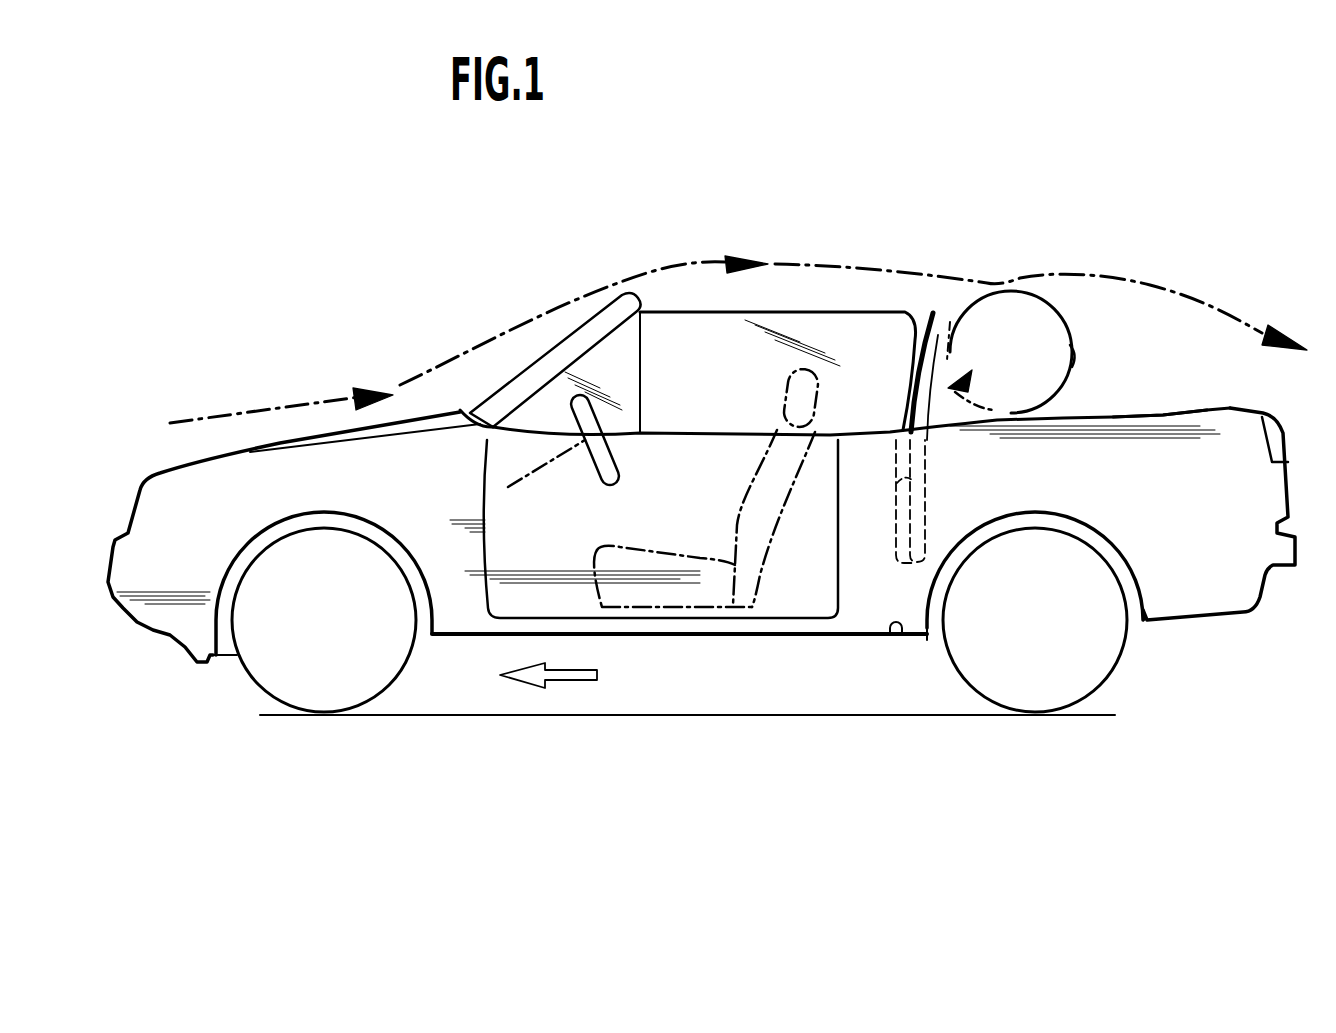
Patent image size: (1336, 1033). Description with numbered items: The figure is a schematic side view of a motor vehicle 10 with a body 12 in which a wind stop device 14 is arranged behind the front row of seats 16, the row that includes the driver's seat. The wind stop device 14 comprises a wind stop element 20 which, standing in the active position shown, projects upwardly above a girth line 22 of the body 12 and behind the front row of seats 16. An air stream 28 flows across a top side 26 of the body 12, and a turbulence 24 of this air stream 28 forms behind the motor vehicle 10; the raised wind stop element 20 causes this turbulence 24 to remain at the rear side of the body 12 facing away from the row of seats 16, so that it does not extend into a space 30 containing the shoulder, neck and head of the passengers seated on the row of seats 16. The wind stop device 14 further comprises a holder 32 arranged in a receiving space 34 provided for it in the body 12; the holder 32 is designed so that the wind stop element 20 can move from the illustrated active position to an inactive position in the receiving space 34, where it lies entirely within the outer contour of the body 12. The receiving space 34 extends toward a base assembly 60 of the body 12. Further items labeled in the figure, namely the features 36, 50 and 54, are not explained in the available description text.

The motor vehicle 10 is at (447, 585).
The body 12 is at (697, 487).
The wind stop device 14 is at (1007, 413).
The front row of seats 16 is at (613, 603).
The wind stop element 20 is at (916, 325).
The girth line 22 is at (1113, 417).
The turbulence 24 is at (1011, 413).
The top side 26 is at (253, 450).
The air stream 28 is at (347, 403).
The space 30 is at (755, 398).
The holder 32 is at (912, 480).
The receiving space 34 is at (897, 483).
The outlet opening 36 is at (1068, 340).
The deployment direction 50 is at (950, 322).
The B-pillar / belt retractor 54 is at (907, 430).
The base assembly 60 is at (899, 645).